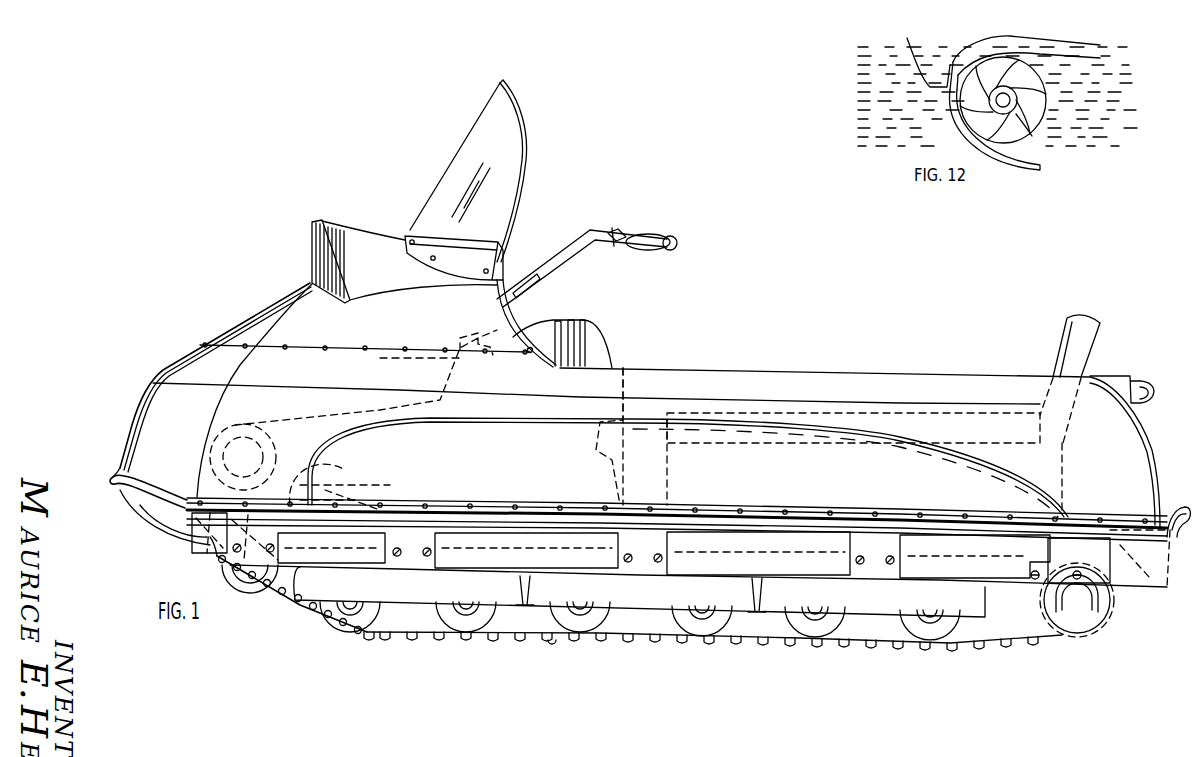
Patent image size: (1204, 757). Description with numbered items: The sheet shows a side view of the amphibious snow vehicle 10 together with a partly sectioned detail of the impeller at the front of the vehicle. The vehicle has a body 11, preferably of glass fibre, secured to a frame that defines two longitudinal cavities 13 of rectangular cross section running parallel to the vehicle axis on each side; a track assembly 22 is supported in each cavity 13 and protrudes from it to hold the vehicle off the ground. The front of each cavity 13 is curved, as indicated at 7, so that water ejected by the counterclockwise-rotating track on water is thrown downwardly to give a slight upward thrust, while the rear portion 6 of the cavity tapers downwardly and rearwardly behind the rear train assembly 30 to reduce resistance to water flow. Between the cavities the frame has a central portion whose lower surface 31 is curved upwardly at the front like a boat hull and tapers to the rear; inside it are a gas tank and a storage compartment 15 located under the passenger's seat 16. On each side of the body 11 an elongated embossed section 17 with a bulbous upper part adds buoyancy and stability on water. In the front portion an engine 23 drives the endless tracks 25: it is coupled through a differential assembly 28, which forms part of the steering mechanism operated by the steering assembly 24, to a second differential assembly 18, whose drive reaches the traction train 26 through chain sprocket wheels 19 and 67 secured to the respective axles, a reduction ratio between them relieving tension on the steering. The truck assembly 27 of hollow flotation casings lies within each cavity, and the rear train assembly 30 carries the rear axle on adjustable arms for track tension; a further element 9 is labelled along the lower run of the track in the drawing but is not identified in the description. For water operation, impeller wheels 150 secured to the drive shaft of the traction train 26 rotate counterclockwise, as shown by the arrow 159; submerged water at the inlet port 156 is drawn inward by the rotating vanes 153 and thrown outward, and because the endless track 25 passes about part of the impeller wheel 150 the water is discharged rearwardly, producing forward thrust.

In FIG. 1, the amphibious snow vehicle 10 is at (842, 351).
In FIG. 1, the body 11 is at (155, 392).
In FIG. 1, the differential assembly 28 is at (243, 423).
In FIG. 1, the steering assembly 24 is at (547, 263).
In FIG. 1, the engine 23 is at (542, 331).
In FIG. 1, the elongated embossed section 17 is at (638, 420).
In FIG. 1, the storage compartment 15 is at (783, 445).
In FIG. 1, the passenger's seat 16 is at (944, 430).
In FIG. 1, the curved front of cavity 7 is at (216, 528).
In FIG. 1, the chain sprocket wheel 19 is at (326, 490).
In FIG. 1, the second differential assembly 18 is at (341, 477).
In FIG. 1, the traction train 26 is at (213, 570).
In FIG. 1, the chain sprocket wheel 67 is at (228, 585).
In FIG. 1, the track assembly 22 is at (261, 610).
In FIG. 1, the endless track 25 is at (372, 640).
In FIG. 12, the endless track 25 is at (1058, 53).
In FIG. 1, the surface of central portion 31 is at (525, 603).
In FIG. 1, the truck assembly 27 is at (762, 605).
In FIG. 1, the track 9 is at (553, 642).
In FIG. 1, the rear train assembly 30 is at (1049, 609).
In FIG. 1, the rear portion of cavity 6 is at (1115, 562).
In FIG. 12, the longitudinal cavity 13 is at (957, 60).
In FIG. 12, the arrow 159 is at (988, 43).
In FIG. 12, the vane 153 is at (1036, 74).
In FIG. 12, the impeller wheel 150 is at (1048, 101).
In FIG. 12, the inlet port 156 is at (1015, 113).